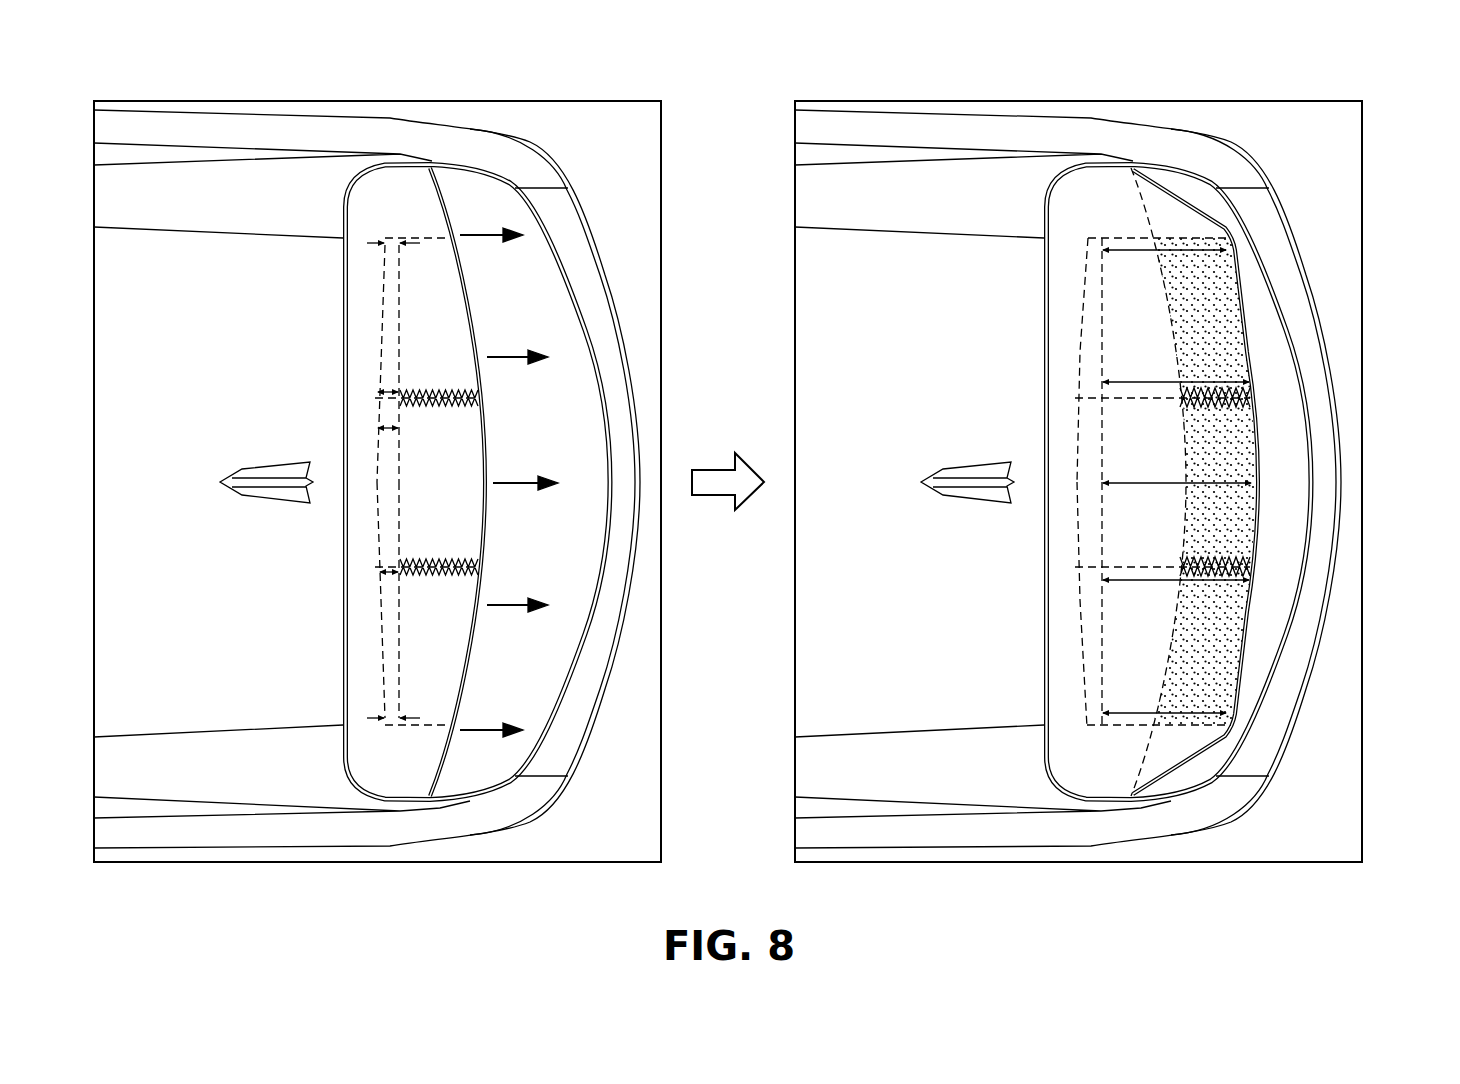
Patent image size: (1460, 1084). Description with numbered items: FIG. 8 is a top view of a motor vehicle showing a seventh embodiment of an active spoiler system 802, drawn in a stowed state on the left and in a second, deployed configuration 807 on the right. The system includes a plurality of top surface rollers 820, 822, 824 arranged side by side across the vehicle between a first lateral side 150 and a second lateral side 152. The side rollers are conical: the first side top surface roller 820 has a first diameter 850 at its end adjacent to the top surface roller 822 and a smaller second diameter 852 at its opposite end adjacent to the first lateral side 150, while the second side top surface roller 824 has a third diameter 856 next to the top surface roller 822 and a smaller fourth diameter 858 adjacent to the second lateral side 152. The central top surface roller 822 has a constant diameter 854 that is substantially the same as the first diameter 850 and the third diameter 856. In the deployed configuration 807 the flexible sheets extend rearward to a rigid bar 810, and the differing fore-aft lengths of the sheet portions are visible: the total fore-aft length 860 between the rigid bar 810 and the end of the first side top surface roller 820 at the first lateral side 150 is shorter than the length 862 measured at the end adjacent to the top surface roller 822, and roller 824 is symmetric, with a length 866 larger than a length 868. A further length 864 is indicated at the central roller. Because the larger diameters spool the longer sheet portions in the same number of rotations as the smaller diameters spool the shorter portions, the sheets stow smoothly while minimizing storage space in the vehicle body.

The first lateral side 150 is at (311, 826).
The second lateral side 152 is at (312, 141).
The active spoiler system 802 is at (448, 146).
The deployed configuration 807 is at (1072, 444).
The rigid bar 810 is at (490, 500).
The first side top surface roller 820 is at (382, 633).
The top surface roller 822 is at (357, 510).
The second side top surface roller 824 is at (382, 330).
The first diameter 850 is at (391, 576).
The second diameter 852 is at (388, 722).
The constant diameter 854 is at (390, 432).
The third diameter 856 is at (388, 391).
The fourth diameter 858 is at (387, 243).
The total fore-aft length 860 is at (1143, 815).
The length 862 is at (1113, 589).
The middle deployed distance 864 is at (1177, 445).
The length 866 is at (1113, 377).
The length 868 is at (1144, 149).